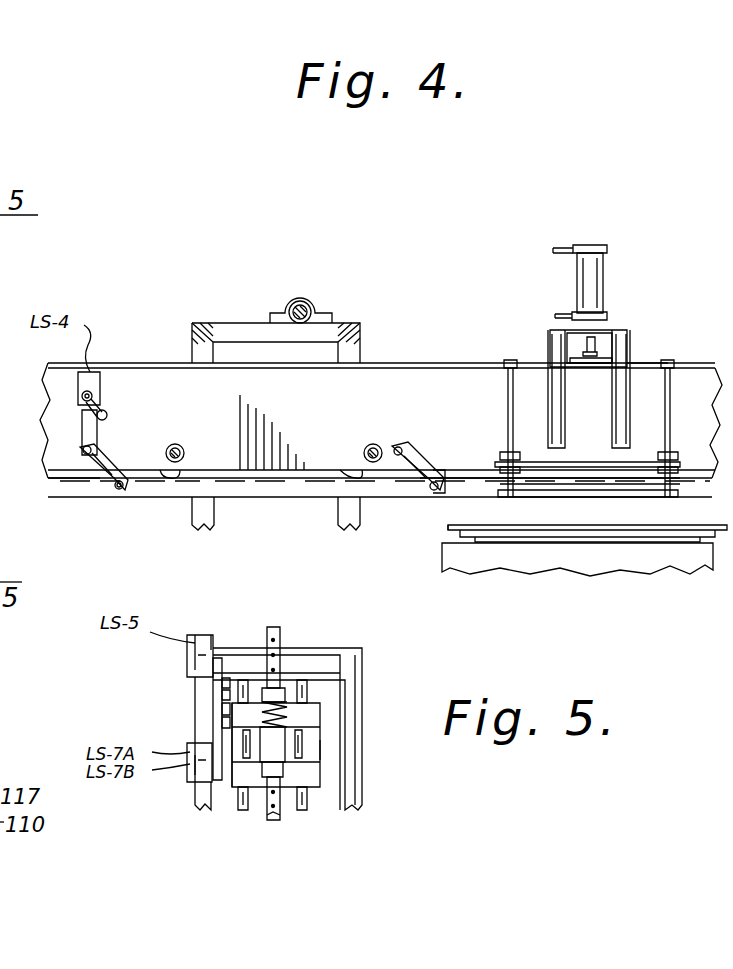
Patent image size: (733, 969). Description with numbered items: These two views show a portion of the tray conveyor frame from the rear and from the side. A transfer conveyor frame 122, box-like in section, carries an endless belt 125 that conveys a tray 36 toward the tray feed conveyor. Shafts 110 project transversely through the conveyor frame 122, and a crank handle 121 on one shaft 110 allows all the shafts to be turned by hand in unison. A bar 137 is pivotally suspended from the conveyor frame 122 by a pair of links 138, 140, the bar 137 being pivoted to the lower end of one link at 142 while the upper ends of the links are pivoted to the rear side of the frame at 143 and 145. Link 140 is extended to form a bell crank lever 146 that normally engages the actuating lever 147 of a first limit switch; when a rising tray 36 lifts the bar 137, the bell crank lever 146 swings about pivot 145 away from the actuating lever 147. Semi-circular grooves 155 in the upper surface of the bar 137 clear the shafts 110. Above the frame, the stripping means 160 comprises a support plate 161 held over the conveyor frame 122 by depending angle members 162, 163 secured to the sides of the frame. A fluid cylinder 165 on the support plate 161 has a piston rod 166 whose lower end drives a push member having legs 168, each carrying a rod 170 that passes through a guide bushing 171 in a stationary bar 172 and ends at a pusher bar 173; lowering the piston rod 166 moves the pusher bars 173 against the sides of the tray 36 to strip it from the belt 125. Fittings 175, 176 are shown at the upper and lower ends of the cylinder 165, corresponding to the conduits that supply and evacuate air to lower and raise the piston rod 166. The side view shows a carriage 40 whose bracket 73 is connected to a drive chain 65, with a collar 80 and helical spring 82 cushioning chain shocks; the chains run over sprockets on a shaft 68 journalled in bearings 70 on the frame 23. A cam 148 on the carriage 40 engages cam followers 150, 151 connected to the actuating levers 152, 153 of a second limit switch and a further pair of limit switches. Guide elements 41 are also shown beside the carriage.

In FIG. 4, the frame 23 is at (228, 325).
In FIG. 5, the frame 23 is at (355, 680).
In FIG. 4, the tray 36 is at (440, 538).
In FIG. 5, the carriage 40 is at (342, 752).
In FIG. 5, the guide post 41 is at (243, 810).
In FIG. 5, the drive chain 65 is at (274, 628).
In FIG. 4, the shaft 68 is at (314, 306).
In FIG. 4, the bearing 70 is at (300, 302).
In FIG. 5, the bracket 73 is at (275, 742).
In FIG. 5, the collar 80 is at (285, 695).
In FIG. 5, the helical spring 82 is at (285, 715).
In FIG. 4, the shaft 110 is at (182, 444).
In FIG. 4, the crank handle 121 is at (610, 558).
In FIG. 4, the conveyor frame 122 is at (390, 380).
In FIG. 4, the endless belt 125 is at (695, 485).
In FIG. 4, the bar 137 is at (270, 500).
In FIG. 4, the link 138 is at (438, 472).
In FIG. 4, the link 140 is at (84, 478).
In FIG. 4, the pivotal connection 142 is at (116, 490).
In FIG. 4, the pivot 143 is at (400, 450).
In FIG. 4, the pivot 145 is at (96, 444).
In FIG. 4, the bell crank lever 146 is at (82, 421).
In FIG. 4, the actuating lever 147 is at (100, 406).
In FIG. 5, the cam 148 is at (214, 770).
In FIG. 5, the cam follower 150 is at (222, 694).
In FIG. 5, the cam follower 151 is at (225, 710).
In FIG. 5, the actuating lever 152 is at (222, 683).
In FIG. 5, the actuating lever 153 is at (225, 722).
In FIG. 4, the semi-circular groove 155 is at (190, 466).
In FIG. 4, the stripping means 160 is at (660, 250).
In FIG. 4, the support plate 161 is at (615, 330).
In FIG. 4, the angle member 162 is at (618, 385).
In FIG. 4, the angle member 163 is at (556, 376).
In FIG. 4, the fluid cylinder 165 is at (604, 278).
In FIG. 4, the piston rod 166 is at (588, 344).
In FIG. 4, the leg 168 is at (640, 366).
In FIG. 4, the rod 170 is at (672, 372).
In FIG. 4, the guide bushing 171 is at (508, 482).
In FIG. 4, the stationary bar 172 is at (603, 455).
In FIG. 4, the pusher bar 173 is at (558, 497).
In FIG. 4, the fitting 175 is at (565, 250).
In FIG. 4, the fitting 176 is at (558, 316).